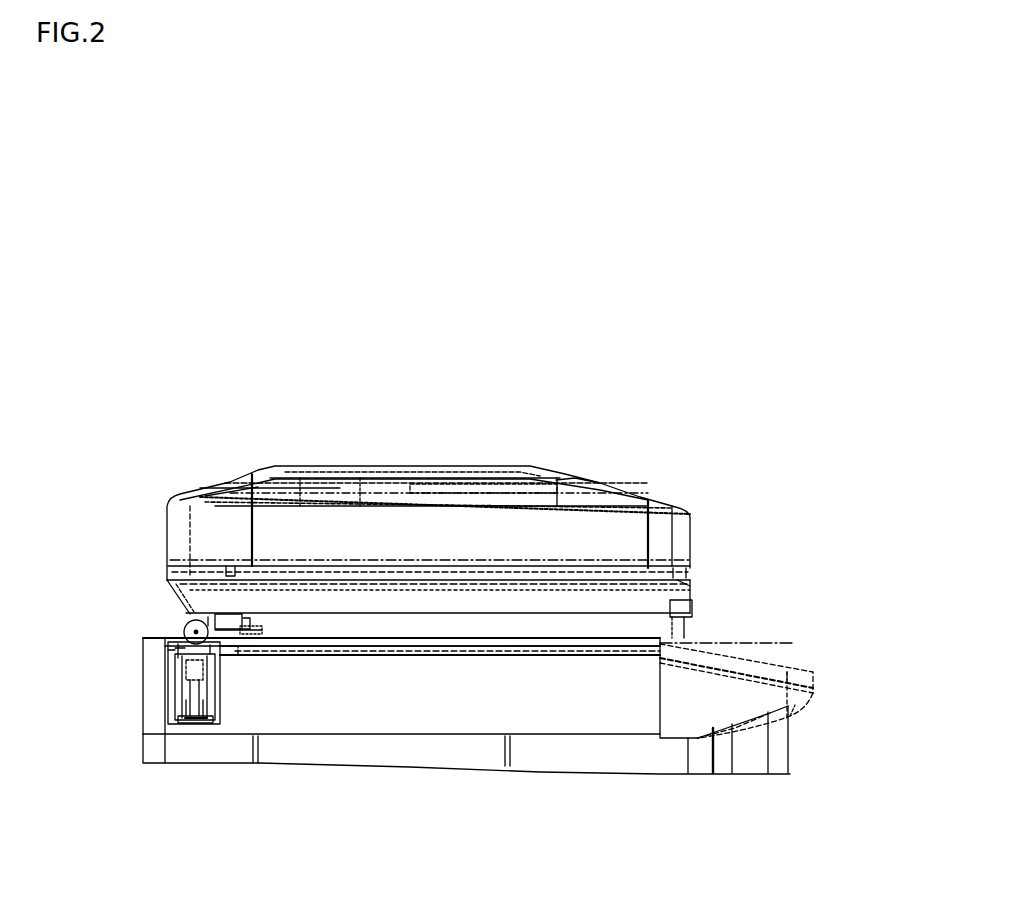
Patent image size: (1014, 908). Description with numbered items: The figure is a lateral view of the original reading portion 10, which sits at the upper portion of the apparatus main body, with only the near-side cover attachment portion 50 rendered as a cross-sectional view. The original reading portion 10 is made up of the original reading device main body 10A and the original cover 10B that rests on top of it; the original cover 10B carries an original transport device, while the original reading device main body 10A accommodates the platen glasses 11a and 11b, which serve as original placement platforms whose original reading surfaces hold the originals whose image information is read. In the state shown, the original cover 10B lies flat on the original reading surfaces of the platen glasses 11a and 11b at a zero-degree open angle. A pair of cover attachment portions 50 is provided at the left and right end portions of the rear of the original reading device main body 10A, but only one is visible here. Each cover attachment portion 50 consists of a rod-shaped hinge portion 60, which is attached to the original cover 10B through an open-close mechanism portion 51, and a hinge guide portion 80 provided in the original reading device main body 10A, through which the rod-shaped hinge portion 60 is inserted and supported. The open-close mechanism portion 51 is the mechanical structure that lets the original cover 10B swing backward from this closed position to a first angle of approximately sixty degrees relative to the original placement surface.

The original reading portion 10 is at (459, 366).
The original reading device main body 10A is at (803, 706).
The original cover 10B is at (683, 543).
The platen glass 11a is at (440, 745).
The platen glass 11b is at (543, 652).
The cover attachment portion 50 is at (79, 628).
The open-close mechanism portion 51 is at (186, 626).
The rod-shaped hinge portion 60 is at (168, 684).
The hinge guide portion 80 is at (168, 707).